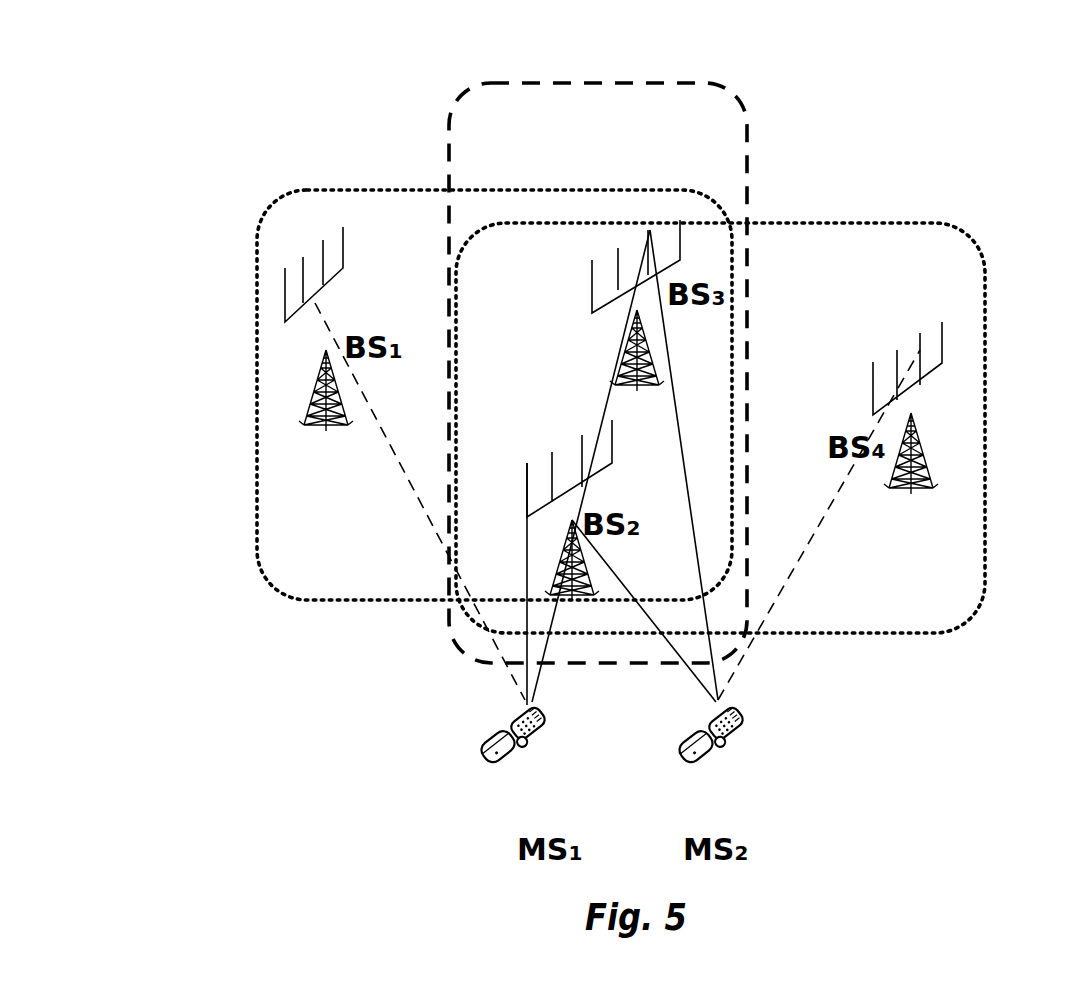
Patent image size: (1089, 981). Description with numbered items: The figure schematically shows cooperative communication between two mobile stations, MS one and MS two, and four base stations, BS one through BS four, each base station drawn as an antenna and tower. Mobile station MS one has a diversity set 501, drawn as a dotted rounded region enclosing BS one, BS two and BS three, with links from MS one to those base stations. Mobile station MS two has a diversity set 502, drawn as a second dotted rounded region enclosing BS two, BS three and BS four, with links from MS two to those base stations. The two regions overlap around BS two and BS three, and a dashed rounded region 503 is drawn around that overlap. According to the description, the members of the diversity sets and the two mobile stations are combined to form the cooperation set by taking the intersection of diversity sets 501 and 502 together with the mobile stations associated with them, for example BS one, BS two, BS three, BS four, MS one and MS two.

The diversity set 501 is at (302, 192).
The diversity set 502 is at (933, 225).
The third base station group (dashed region) 503 is at (713, 85).